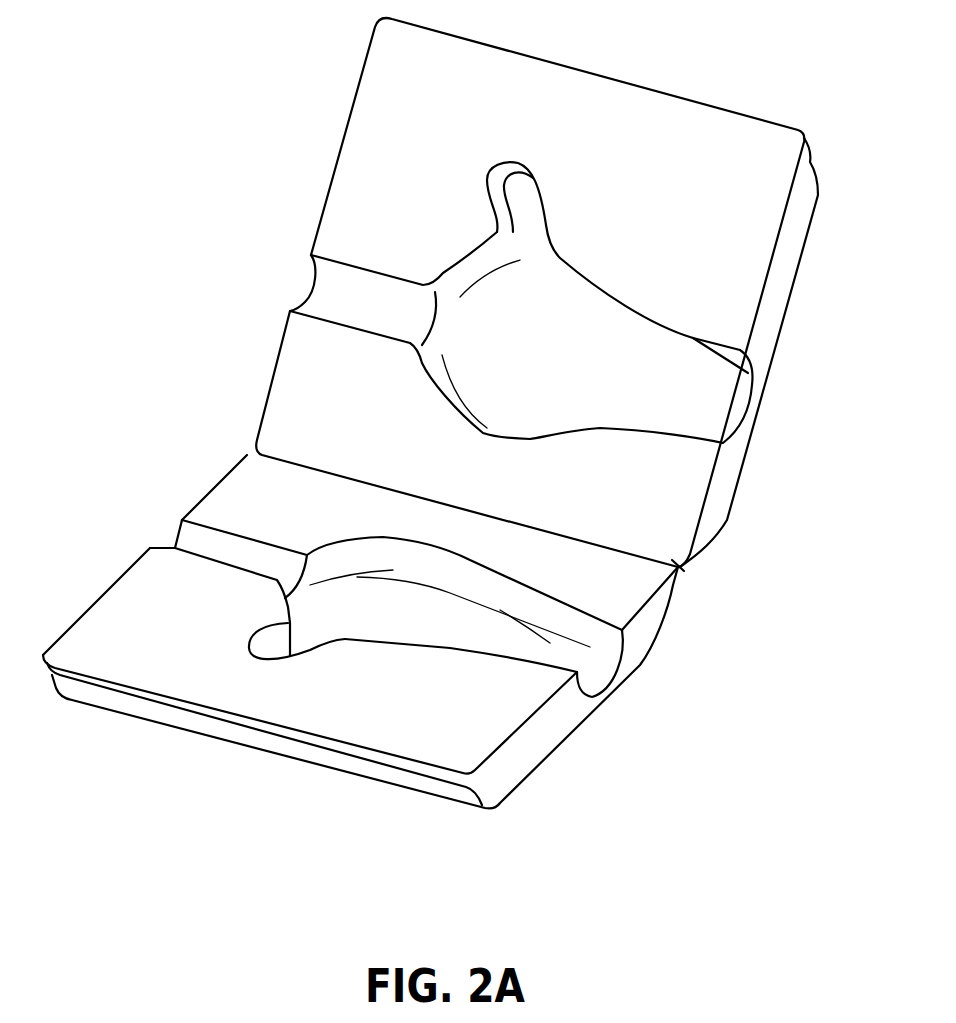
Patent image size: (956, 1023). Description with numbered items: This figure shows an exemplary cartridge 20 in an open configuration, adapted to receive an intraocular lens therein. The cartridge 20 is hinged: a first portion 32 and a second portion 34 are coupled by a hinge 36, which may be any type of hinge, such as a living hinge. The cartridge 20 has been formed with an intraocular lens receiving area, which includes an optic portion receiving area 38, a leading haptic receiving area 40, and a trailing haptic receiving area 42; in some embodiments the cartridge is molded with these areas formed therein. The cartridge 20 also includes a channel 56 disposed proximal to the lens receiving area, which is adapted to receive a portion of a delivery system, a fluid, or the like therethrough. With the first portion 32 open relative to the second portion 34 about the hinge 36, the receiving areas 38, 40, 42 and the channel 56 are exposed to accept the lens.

The cartridge 20 is at (439, 432).
The first portion 32 is at (775, 400).
The second portion 34 is at (560, 772).
The hinge 36 is at (690, 573).
The optic portion receiving area 38 is at (350, 580).
The leading haptic receiving area 40 is at (580, 662).
The trailing haptic receiving area 42 is at (313, 627).
The channel 56 is at (196, 547).